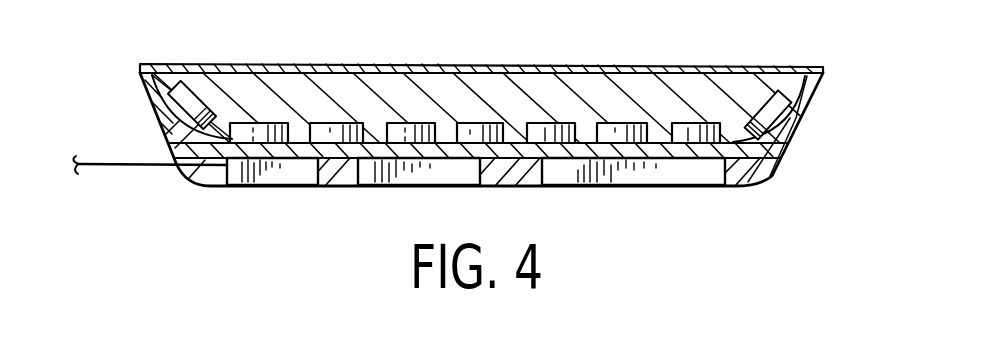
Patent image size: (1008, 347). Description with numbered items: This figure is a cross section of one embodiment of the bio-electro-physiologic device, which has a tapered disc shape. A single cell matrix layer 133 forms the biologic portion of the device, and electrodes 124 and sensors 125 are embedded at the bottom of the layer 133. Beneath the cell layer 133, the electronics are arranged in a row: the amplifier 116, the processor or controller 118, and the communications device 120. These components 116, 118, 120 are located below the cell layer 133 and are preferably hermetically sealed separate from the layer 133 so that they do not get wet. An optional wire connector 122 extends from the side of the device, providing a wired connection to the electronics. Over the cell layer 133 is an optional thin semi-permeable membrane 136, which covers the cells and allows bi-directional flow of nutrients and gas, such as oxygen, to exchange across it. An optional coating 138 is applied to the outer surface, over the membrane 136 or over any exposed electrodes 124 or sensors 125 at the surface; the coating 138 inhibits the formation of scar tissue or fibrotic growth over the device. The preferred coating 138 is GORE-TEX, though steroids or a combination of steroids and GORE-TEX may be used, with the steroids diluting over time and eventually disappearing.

The amplifier 116 is at (620, 187).
The controller 118 is at (403, 163).
The communication device 120 is at (248, 173).
The wire connector 122 is at (114, 162).
The electrodes 124 is at (780, 127).
The sensors 125 is at (327, 122).
The cell matrix layer 133 is at (447, 97).
The semi-permeable membrane 136 is at (824, 72).
The coating 138 is at (723, 66).